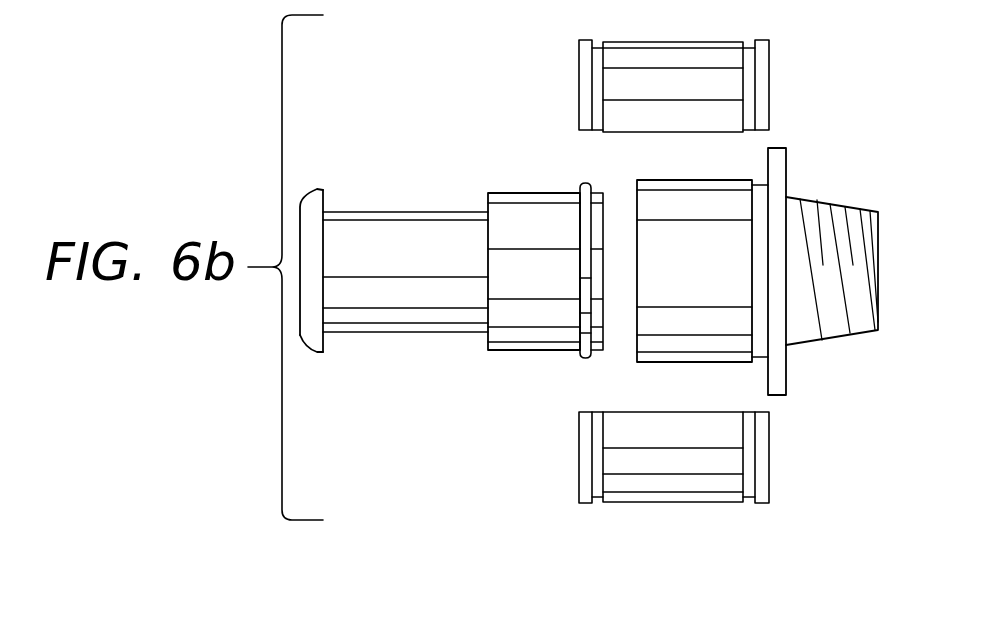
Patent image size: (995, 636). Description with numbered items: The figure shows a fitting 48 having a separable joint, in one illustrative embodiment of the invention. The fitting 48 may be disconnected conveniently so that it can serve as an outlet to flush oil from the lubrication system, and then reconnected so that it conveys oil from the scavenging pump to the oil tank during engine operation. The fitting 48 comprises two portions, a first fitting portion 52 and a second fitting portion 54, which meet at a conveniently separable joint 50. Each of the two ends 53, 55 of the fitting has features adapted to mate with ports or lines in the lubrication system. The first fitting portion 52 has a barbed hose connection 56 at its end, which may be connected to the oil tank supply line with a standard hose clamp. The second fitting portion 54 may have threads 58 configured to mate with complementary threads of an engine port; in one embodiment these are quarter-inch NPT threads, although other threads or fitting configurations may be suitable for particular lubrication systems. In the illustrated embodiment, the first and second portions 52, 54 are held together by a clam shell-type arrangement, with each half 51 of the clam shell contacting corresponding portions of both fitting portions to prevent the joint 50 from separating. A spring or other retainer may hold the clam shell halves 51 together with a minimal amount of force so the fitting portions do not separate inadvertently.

The fitting 48 is at (455, 107).
The separable joint 50 is at (622, 195).
The clam shell half 51 is at (769, 47).
The first fitting portion 52 is at (380, 346).
The end of the fitting 53 is at (326, 187).
The second fitting portion 54 is at (810, 364).
The end of the fitting 55 is at (822, 201).
The barbed hose connection 56 is at (318, 353).
The threads 58 is at (823, 340).